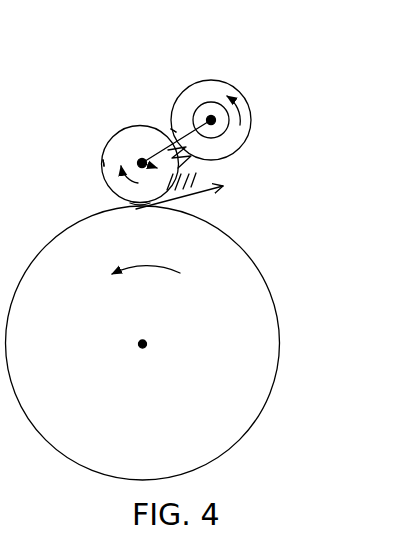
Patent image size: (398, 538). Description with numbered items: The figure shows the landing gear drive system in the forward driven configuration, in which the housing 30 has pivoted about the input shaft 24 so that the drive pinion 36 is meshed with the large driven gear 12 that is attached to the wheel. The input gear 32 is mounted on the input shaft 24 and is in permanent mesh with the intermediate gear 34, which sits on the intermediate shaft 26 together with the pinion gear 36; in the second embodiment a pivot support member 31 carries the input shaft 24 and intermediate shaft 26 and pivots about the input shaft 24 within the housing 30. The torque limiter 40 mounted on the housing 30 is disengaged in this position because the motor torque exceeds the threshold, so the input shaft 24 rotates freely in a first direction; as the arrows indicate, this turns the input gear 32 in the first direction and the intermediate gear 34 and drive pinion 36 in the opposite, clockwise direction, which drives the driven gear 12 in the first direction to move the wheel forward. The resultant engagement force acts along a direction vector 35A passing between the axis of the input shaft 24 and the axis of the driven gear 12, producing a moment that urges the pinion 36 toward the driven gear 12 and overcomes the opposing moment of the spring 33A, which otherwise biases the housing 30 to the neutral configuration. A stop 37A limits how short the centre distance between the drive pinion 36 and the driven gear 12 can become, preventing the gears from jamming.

The driven gear 12 is at (271, 292).
The input shaft 24 is at (214, 125).
The intermediate shaft 26 is at (123, 130).
The housing 30 is at (175, 130).
The pivot support member 31 is at (175, 130).
The input gear 32 is at (232, 87).
The spring 33A is at (184, 163).
The intermediate gear 34 is at (103, 162).
The pinion gear 36 is at (103, 162).
The direction vector 35A is at (206, 200).
The stop 37A is at (136, 205).
The torque limiter 40 is at (230, 129).